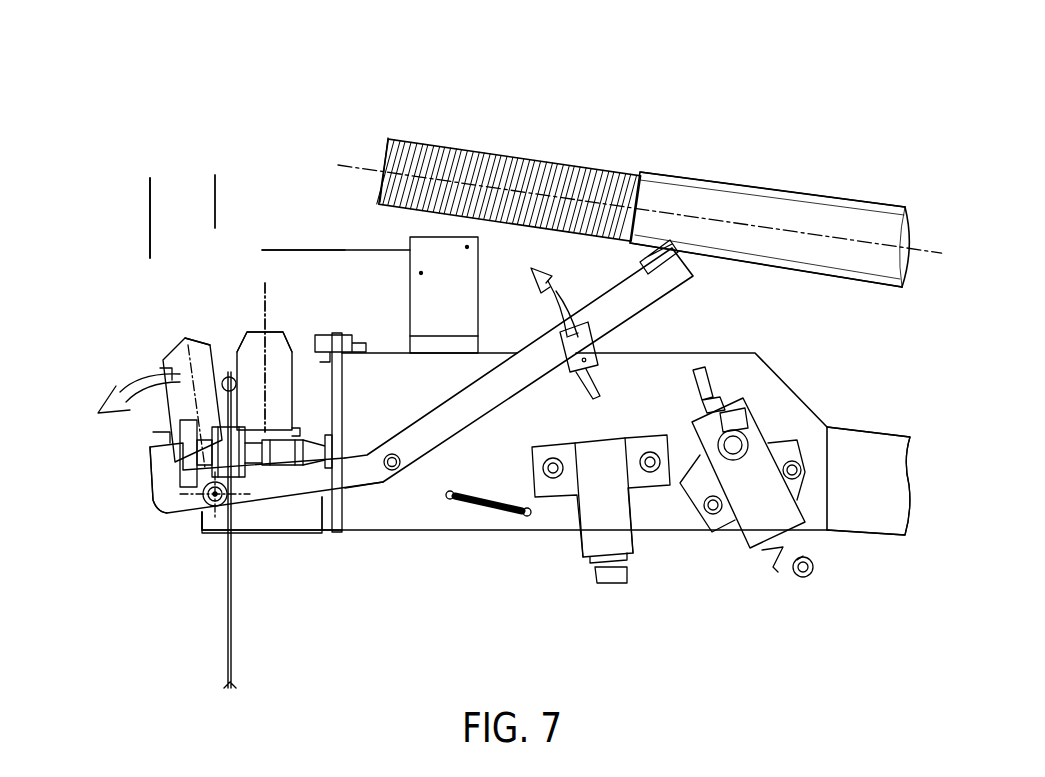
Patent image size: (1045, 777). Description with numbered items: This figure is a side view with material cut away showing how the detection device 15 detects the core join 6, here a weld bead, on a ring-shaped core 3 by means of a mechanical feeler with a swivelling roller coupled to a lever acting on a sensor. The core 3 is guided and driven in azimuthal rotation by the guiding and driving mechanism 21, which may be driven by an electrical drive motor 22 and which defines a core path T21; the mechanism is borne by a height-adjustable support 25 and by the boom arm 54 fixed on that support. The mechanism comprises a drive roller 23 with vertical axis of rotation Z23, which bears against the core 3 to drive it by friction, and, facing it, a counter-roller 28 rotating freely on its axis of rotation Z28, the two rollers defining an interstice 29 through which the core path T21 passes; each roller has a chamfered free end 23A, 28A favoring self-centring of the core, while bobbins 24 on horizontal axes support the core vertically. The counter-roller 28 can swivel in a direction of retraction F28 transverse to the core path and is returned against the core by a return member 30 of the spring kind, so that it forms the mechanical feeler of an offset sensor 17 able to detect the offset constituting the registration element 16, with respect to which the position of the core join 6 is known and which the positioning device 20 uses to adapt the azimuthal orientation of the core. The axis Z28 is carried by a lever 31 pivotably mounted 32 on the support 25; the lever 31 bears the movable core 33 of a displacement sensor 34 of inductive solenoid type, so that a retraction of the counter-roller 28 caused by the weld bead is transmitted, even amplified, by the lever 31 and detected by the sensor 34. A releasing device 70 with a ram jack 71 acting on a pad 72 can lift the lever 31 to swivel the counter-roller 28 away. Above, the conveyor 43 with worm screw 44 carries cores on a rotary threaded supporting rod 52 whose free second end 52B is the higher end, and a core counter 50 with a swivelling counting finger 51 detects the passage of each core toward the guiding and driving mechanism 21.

The core 3 is at (233, 675).
The core join 6 is at (140, 216).
The detection device 15 is at (455, 574).
The registration element 16 is at (226, 372).
The offset sensor 17 is at (143, 482).
The positioning device 20 is at (317, 611).
The guiding and driving mechanism 21 is at (291, 332).
The drive motor 22 is at (307, 522).
The drive roller 23 is at (292, 358).
The chamfered free end 23A is at (282, 363).
The bobbin 24 is at (236, 470).
The support 25 is at (878, 514).
The boom arm 54 is at (868, 481).
The counter-roller 28 is at (178, 402).
The chamfered free end 28A is at (222, 378).
The interstice 29 is at (228, 366).
The return member 30 is at (617, 312).
The lever 31 is at (167, 514).
The pivot mounting 32 is at (213, 503).
The movable core 33 is at (593, 388).
The displacement sensor 34 is at (613, 548).
The conveyor 43 is at (800, 156).
The worm screw 44 is at (532, 156).
The core counter 50 is at (456, 270).
The counting finger 51 is at (345, 250).
The threaded supporting rod 52 is at (850, 205).
The free second end 52B is at (406, 122).
The releasing device 70 is at (782, 400).
The ram jack 71 is at (712, 372).
The pad 72 is at (676, 248).
The direction of retraction F28 is at (113, 378).
The core path T21 is at (194, 201).
The axis of rotation of the drive roller Z23 is at (268, 395).
The axis of rotation of the counter-roller Z28 is at (180, 319).